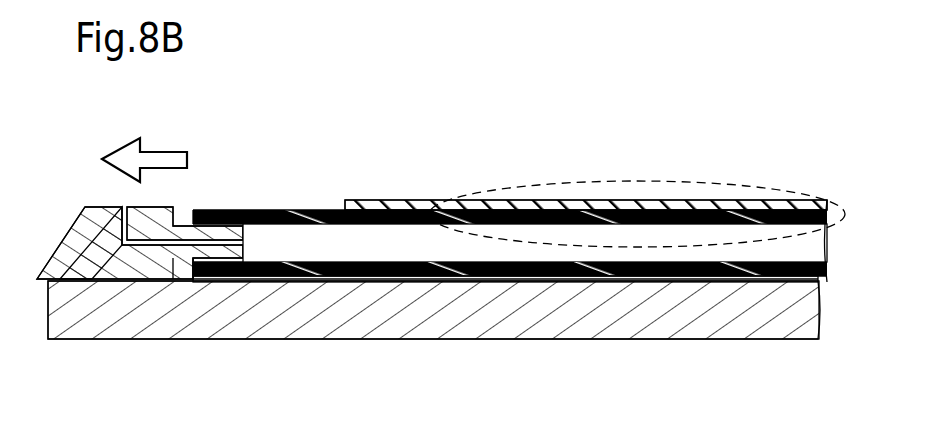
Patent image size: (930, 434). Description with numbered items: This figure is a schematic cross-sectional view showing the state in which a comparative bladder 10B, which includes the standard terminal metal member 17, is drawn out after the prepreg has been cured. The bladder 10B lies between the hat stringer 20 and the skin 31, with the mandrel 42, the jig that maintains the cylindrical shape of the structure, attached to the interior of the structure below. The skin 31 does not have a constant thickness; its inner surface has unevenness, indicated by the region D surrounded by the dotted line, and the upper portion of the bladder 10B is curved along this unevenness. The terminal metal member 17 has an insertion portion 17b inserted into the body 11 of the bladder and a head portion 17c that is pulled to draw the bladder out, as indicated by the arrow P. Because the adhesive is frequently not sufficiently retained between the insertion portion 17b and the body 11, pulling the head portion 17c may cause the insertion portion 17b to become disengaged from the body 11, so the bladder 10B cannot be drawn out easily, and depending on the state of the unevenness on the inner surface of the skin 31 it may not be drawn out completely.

The bladder 10B is at (463, 168).
The body 11 is at (297, 213).
The terminal metal member 17 is at (58, 213).
The insertion portion 17b is at (182, 258).
The head portion 17c is at (90, 267).
The hat stringer 20 is at (470, 283).
The skin 31 is at (365, 200).
The mandrel 42 is at (258, 338).
The region D is at (637, 182).
The arrow P is at (144, 149).